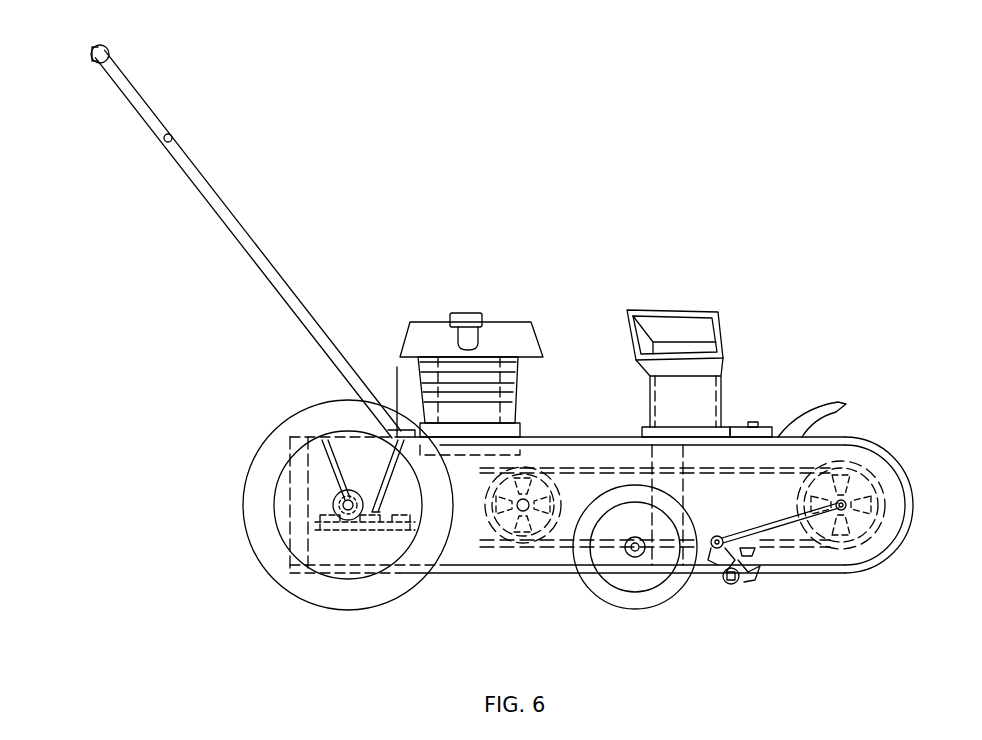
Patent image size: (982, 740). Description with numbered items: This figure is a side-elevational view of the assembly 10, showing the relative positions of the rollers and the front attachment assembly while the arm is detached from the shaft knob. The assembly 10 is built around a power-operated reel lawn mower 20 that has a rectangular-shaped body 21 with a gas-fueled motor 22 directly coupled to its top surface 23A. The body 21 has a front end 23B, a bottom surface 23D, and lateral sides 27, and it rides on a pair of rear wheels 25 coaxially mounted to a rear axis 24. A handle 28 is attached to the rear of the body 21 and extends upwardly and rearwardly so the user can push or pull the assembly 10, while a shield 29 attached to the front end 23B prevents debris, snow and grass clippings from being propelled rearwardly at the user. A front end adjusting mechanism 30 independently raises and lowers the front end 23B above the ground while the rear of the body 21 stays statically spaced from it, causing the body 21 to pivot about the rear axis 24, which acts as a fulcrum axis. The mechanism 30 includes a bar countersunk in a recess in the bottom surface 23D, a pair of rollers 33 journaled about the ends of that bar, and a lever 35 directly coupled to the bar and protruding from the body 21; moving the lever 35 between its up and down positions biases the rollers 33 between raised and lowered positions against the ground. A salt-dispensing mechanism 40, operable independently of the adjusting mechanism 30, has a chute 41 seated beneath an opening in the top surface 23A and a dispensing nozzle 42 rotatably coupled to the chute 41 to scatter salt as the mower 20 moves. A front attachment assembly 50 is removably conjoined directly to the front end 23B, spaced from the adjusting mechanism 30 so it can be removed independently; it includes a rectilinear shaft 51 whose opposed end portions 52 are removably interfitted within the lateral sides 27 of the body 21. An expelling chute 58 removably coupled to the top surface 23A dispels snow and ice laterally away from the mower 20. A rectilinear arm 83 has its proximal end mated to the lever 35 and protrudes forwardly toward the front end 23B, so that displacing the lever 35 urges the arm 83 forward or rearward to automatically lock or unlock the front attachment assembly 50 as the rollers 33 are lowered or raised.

The assembly 10 is at (392, 153).
The power-operated reel lawn mower 20 is at (314, 396).
The body 21 is at (558, 575).
The gas-fueled motor 22 is at (441, 320).
The top surface 23A is at (556, 437).
The front end 23B is at (850, 441).
The bottom surface 23D is at (492, 573).
The rear axis 24 is at (335, 503).
The rear wheels 25 is at (280, 560).
The lateral sides 27 is at (608, 557).
The handle 28 is at (108, 54).
The shield 29 is at (828, 403).
The front end adjusting mechanism 30 is at (758, 585).
The rollers 33 is at (735, 583).
The lever 35 is at (716, 552).
The salt-dispensing mechanism 40 is at (337, 468).
The chute 41 is at (405, 540).
The dispensing nozzle 42 is at (357, 547).
The front attachment assembly 50 is at (730, 427).
The rectilinear shaft 51 is at (843, 503).
The opposed end portions 52 is at (844, 508).
The expelling chute 58 is at (683, 330).
The rectilinear arm 83 is at (778, 532).